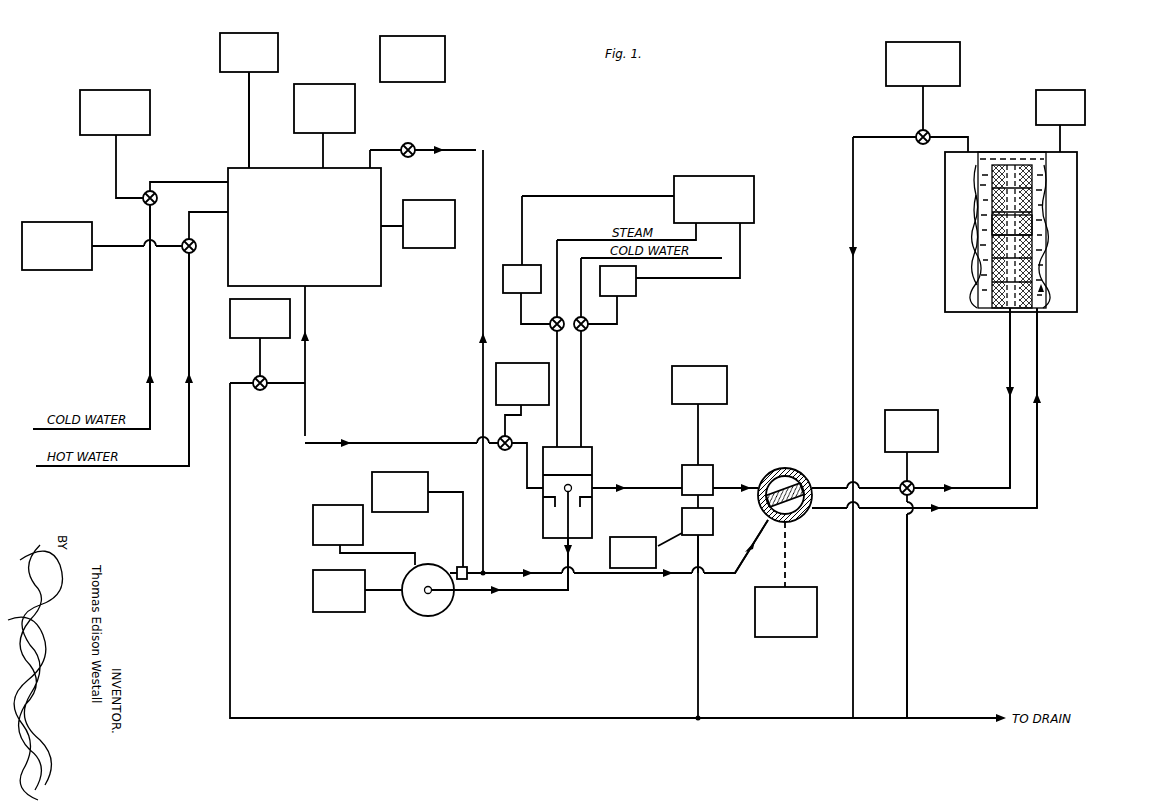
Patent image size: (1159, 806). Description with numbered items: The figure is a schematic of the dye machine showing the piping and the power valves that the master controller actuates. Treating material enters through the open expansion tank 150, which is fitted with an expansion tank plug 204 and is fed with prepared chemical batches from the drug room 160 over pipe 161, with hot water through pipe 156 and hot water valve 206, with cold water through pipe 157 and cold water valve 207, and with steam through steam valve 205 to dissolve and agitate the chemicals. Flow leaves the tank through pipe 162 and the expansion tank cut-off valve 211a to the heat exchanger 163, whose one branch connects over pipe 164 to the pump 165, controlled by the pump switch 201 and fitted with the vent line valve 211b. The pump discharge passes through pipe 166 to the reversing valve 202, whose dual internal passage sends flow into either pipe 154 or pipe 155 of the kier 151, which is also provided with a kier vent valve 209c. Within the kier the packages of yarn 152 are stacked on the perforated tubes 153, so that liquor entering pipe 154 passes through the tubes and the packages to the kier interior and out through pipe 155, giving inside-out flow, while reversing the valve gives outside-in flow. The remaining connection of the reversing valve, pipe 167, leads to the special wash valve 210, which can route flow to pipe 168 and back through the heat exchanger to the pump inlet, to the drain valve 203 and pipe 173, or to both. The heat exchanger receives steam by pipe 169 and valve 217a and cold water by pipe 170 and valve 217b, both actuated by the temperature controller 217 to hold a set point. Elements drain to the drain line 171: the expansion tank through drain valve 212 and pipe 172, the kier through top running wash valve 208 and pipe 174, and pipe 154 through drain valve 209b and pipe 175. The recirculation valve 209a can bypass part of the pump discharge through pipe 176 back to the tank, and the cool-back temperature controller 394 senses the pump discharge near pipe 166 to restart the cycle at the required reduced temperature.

The expansion tank 150 is at (355, 288).
The kier 151 is at (1077, 205).
The packages of yarn 152 is at (996, 225).
The tubes 153 is at (988, 265).
The pipe 154 is at (1008, 358).
The pipe 155 is at (1039, 358).
The pipe 156 is at (188, 330).
The pipe 157 is at (149, 310).
The drug room 160 is at (251, 35).
The pipe 161 is at (248, 100).
The pipe 162 is at (404, 443).
The heat exchanger 163 is at (592, 450).
The pipe 164 is at (503, 598).
The pump 165 is at (421, 610).
The pipe 166 is at (503, 572).
The pipe 167 is at (730, 486).
The pipe 168 is at (648, 478).
The pipe 169 is at (561, 244).
The pipe 170 is at (585, 263).
The drain line 171 is at (579, 718).
The pipe 172 is at (230, 637).
The pipe 173 is at (699, 683).
The pipe 174 is at (852, 335).
The pipe 175 is at (908, 598).
The pipe 176 is at (485, 180).
The pump switch 201 is at (313, 580).
The reversing valve 202 is at (755, 632).
The drain valve 203 is at (634, 537).
The expansion tank plug 204 is at (430, 248).
The steam valve 205 is at (338, 79).
The hot water valve 206 is at (65, 222).
The cold water valve 207 is at (112, 90).
The top running wash valve 208 is at (960, 55).
The recirculation valve 209a is at (445, 50).
The drain valve 209b is at (920, 421).
The kier vent control 209c is at (1085, 98).
The special wash valve 210 is at (727, 380).
The expansion tank cut-off valve 211a is at (496, 377).
The vent line valve 211b is at (330, 505).
The drain valve 212 is at (230, 310).
The temperature controller 217 is at (754, 181).
The valve 217a is at (509, 266).
The valve 217b is at (630, 296).
The cool-back temperature controller 394 is at (372, 488).